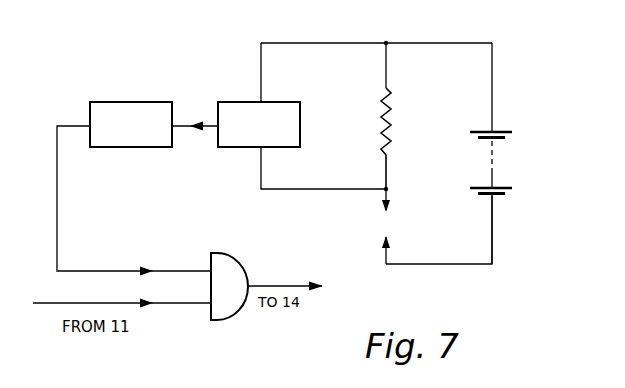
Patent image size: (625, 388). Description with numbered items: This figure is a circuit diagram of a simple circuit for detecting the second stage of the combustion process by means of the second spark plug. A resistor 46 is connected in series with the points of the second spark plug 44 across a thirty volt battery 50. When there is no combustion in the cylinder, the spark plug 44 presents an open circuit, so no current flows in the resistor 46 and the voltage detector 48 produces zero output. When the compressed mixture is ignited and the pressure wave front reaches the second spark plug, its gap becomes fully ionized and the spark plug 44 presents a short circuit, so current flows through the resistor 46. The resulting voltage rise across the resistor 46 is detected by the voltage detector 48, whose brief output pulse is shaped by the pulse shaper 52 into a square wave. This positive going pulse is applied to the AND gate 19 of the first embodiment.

The pulse shaper 52 is at (128, 123).
The voltage detector 48 is at (273, 122).
The resistor 46 is at (383, 136).
The second spark plug 44 is at (382, 226).
The battery 50 is at (495, 172).
The AND gate 19 is at (238, 314).